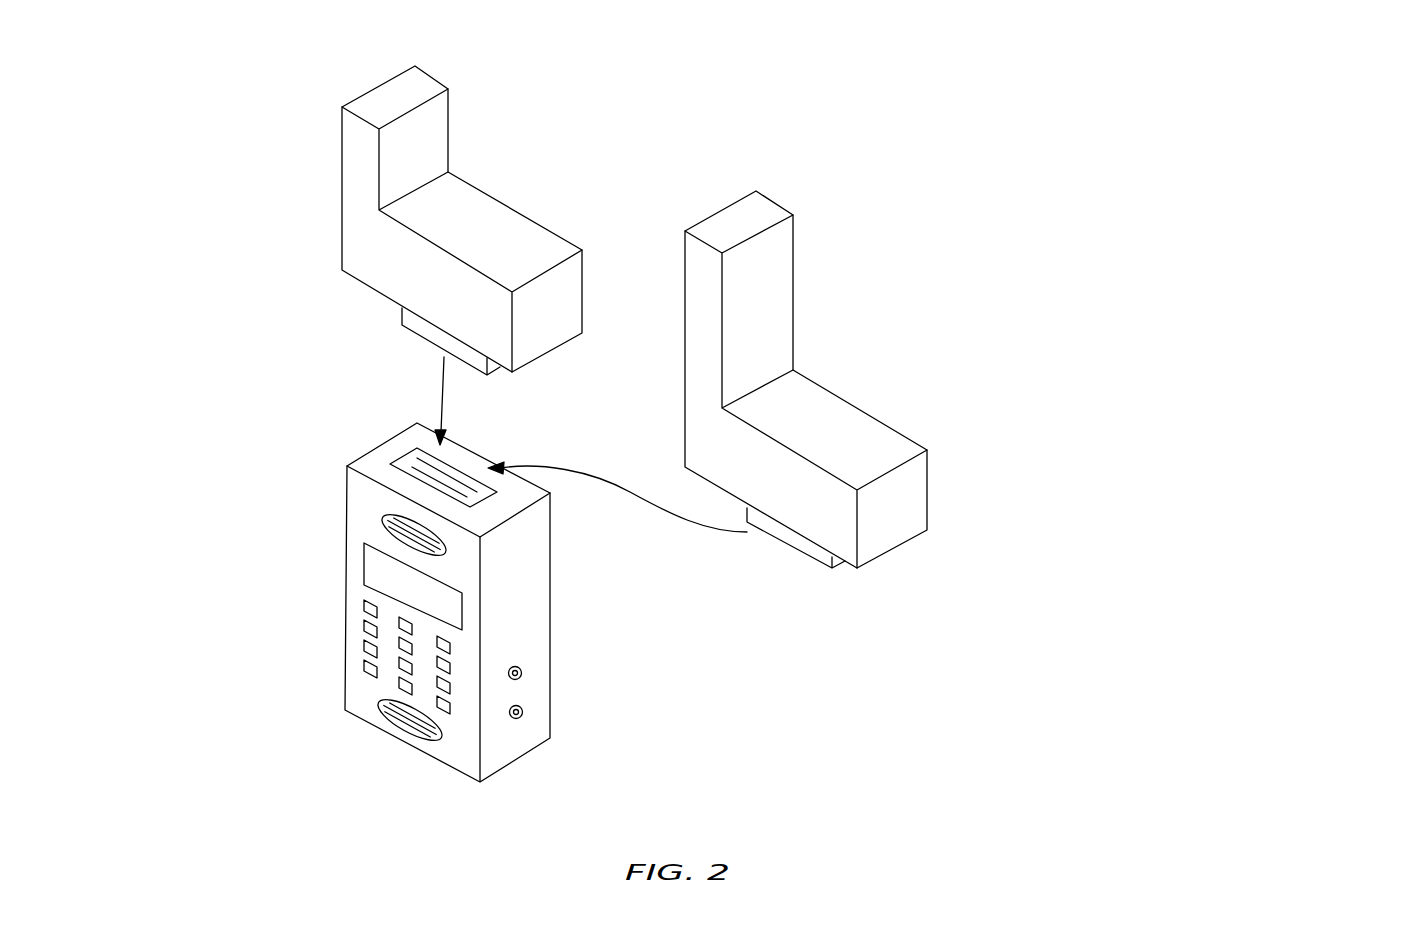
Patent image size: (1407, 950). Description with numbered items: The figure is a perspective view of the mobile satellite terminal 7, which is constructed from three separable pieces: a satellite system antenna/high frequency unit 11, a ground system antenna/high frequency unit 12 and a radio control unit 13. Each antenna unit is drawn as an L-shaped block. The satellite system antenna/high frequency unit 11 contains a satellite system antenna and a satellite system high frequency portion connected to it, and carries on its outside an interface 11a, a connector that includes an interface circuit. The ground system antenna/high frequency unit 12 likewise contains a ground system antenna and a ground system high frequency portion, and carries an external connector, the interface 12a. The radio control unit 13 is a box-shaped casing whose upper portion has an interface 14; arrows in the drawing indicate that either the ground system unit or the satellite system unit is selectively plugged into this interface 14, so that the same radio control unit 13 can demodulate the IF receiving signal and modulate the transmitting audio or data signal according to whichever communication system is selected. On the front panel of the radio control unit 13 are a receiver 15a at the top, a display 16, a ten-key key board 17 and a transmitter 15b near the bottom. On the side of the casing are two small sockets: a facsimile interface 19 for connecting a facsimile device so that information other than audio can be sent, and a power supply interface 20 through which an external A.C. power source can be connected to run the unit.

The mobile satellite terminal 7 is at (362, 768).
The satellite system antenna/high frequency unit 11 is at (770, 208).
The interface 11a is at (822, 557).
The ground system antenna/high frequency unit 12 is at (431, 84).
The interface 12a is at (405, 322).
The radio control unit 13 is at (502, 757).
The interface 14 is at (402, 462).
The receiver 15a is at (390, 520).
The transmitter 15b is at (378, 704).
The display 16 is at (375, 572).
The key board 17 is at (373, 648).
The facsimile interface 19 is at (522, 675).
The power supply interface 20 is at (523, 714).